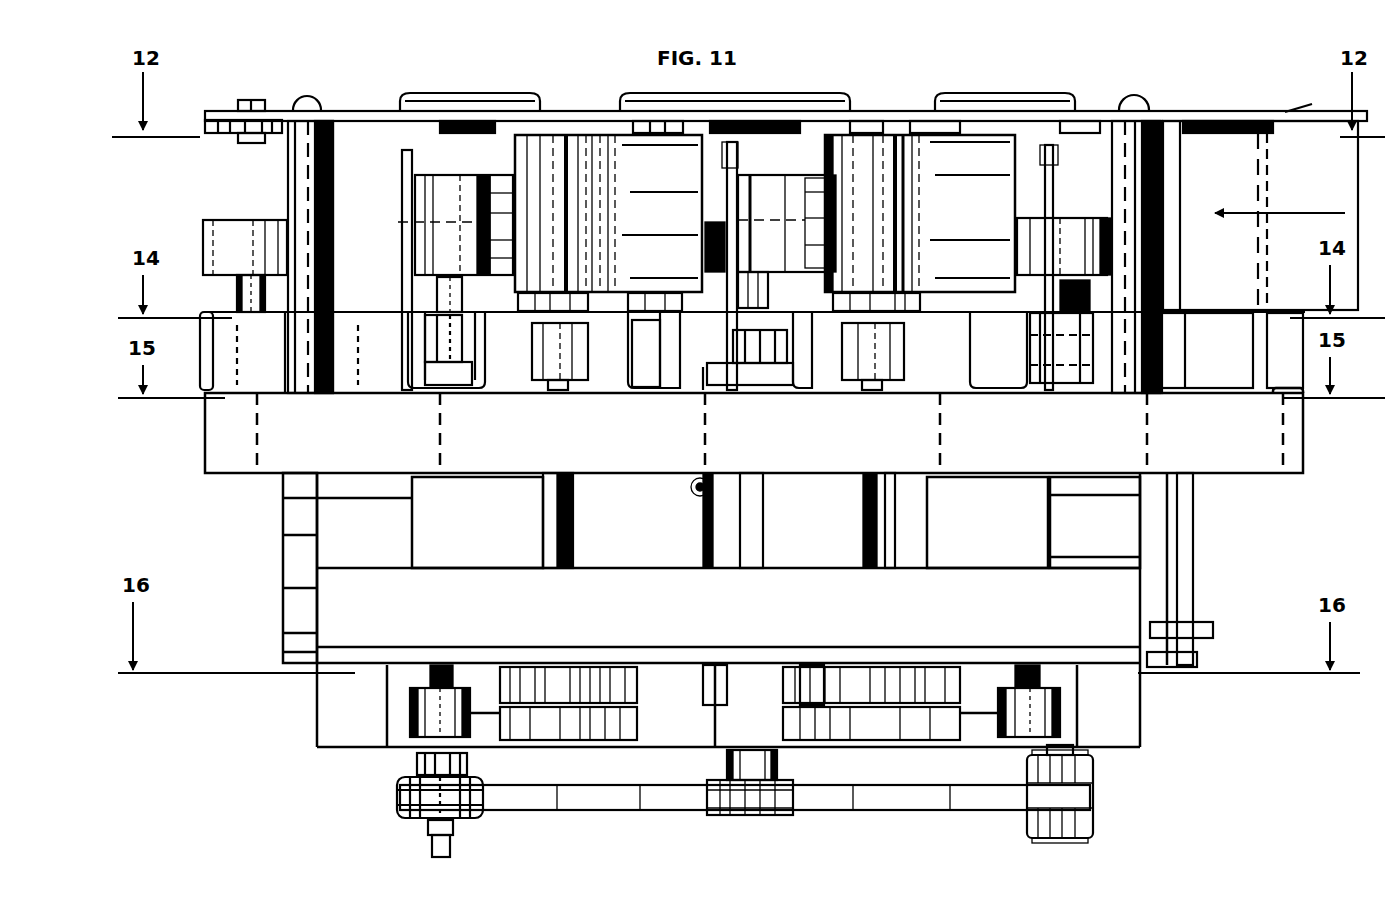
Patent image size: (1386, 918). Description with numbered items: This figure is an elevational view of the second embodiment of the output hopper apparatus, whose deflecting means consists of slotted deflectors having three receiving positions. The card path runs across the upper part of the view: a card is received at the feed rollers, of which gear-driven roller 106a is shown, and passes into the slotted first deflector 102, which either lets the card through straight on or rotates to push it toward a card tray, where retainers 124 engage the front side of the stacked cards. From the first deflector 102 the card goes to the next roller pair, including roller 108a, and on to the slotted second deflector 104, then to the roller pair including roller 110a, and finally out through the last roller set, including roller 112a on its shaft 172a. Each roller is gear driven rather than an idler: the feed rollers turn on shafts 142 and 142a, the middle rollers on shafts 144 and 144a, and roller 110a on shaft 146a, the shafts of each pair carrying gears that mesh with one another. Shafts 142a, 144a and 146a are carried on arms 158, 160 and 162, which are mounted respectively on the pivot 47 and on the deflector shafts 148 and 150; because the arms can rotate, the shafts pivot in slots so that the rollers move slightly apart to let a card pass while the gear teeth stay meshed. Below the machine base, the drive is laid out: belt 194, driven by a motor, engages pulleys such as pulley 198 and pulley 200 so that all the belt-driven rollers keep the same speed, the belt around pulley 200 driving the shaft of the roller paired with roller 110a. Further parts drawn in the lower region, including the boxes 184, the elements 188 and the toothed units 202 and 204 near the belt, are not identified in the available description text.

The pivot 47 is at (1193, 530).
The first deflector 102 is at (937, 234).
The second deflector 104 is at (625, 227).
The feed roller 106a is at (1017, 213).
The roller 108a is at (705, 258).
The roller 110a is at (398, 248).
The roller 112a is at (227, 243).
The retainer 124 is at (1064, 160).
The shaft 142 is at (1070, 745).
The shaft 142a is at (1070, 292).
The shaft 144 is at (730, 750).
The shaft 144a is at (787, 241).
The shaft 146a is at (440, 287).
The deflector shaft 148 is at (867, 525).
The deflector shaft 150 is at (568, 478).
The arm 158 is at (1150, 585).
The arm 160 is at (710, 537).
The arm 162 is at (575, 517).
The shaft 172a is at (240, 293).
The motor 184 is at (480, 543).
The bearing 188 is at (420, 720).
The belt 194 is at (616, 800).
The pulley 198 is at (780, 770).
The pulley 200 is at (1095, 772).
The gear 202 is at (640, 712).
The gear 204 is at (785, 705).